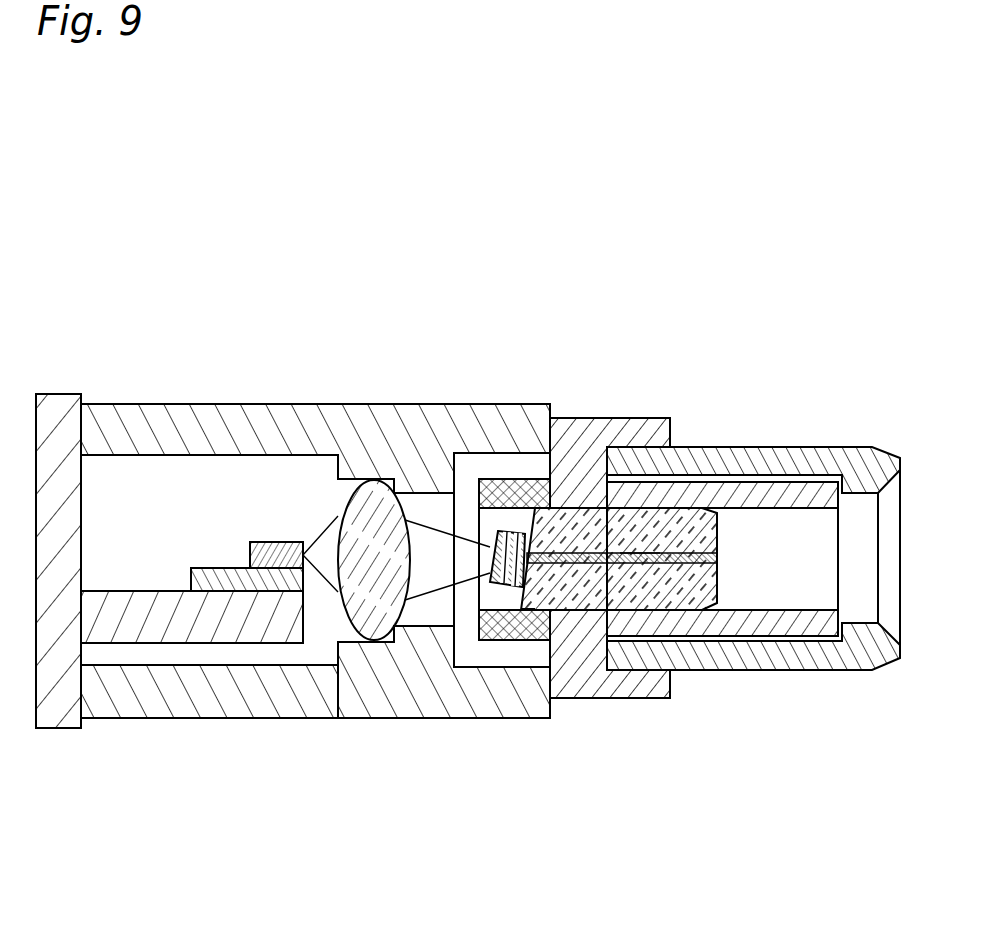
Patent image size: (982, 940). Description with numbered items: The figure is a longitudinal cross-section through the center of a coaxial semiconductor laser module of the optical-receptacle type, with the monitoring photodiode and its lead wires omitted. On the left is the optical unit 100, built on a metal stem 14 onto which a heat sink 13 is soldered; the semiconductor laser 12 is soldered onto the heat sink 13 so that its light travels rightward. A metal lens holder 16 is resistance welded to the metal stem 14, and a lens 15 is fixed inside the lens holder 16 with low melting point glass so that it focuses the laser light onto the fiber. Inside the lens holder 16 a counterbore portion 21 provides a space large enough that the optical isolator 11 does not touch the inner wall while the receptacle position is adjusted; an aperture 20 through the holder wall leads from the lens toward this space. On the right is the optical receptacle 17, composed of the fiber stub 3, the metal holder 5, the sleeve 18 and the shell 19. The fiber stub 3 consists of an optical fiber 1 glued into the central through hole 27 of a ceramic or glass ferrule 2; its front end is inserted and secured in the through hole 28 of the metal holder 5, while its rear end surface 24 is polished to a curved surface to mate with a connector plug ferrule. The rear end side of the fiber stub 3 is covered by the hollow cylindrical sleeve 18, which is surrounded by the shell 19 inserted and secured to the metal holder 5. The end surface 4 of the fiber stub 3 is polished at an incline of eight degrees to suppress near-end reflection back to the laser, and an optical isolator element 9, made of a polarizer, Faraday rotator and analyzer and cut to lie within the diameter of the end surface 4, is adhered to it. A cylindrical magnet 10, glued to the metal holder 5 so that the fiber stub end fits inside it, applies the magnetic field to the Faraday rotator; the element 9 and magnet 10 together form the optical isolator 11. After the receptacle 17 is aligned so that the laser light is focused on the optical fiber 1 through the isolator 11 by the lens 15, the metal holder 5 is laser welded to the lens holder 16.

The optical fiber 1 is at (657, 550).
The ferrule 2 is at (583, 510).
The fiber stub 3 is at (619, 450).
The end surface 4 is at (517, 597).
The metal holder 5 is at (645, 418).
The optical isolator element 9 is at (515, 531).
The cylindrical magnet 10 is at (482, 477).
The optical isolator 11 is at (469, 403).
The semiconductor laser 12 is at (270, 542).
The heat sink 13 is at (193, 565).
The metal stem 14 is at (62, 398).
The lens 15 is at (363, 503).
The lens holder 16 is at (364, 404).
The optical receptacle 17 is at (727, 401).
The sleeve 18 is at (720, 482).
The shell 19 is at (803, 447).
The aperture 20 is at (437, 626).
The counterbore portion 21 is at (512, 653).
The rear end surface 24 is at (717, 578).
The through hole 27 is at (633, 557).
The through hole 28 is at (598, 613).
The optical unit 100 is at (525, 827).